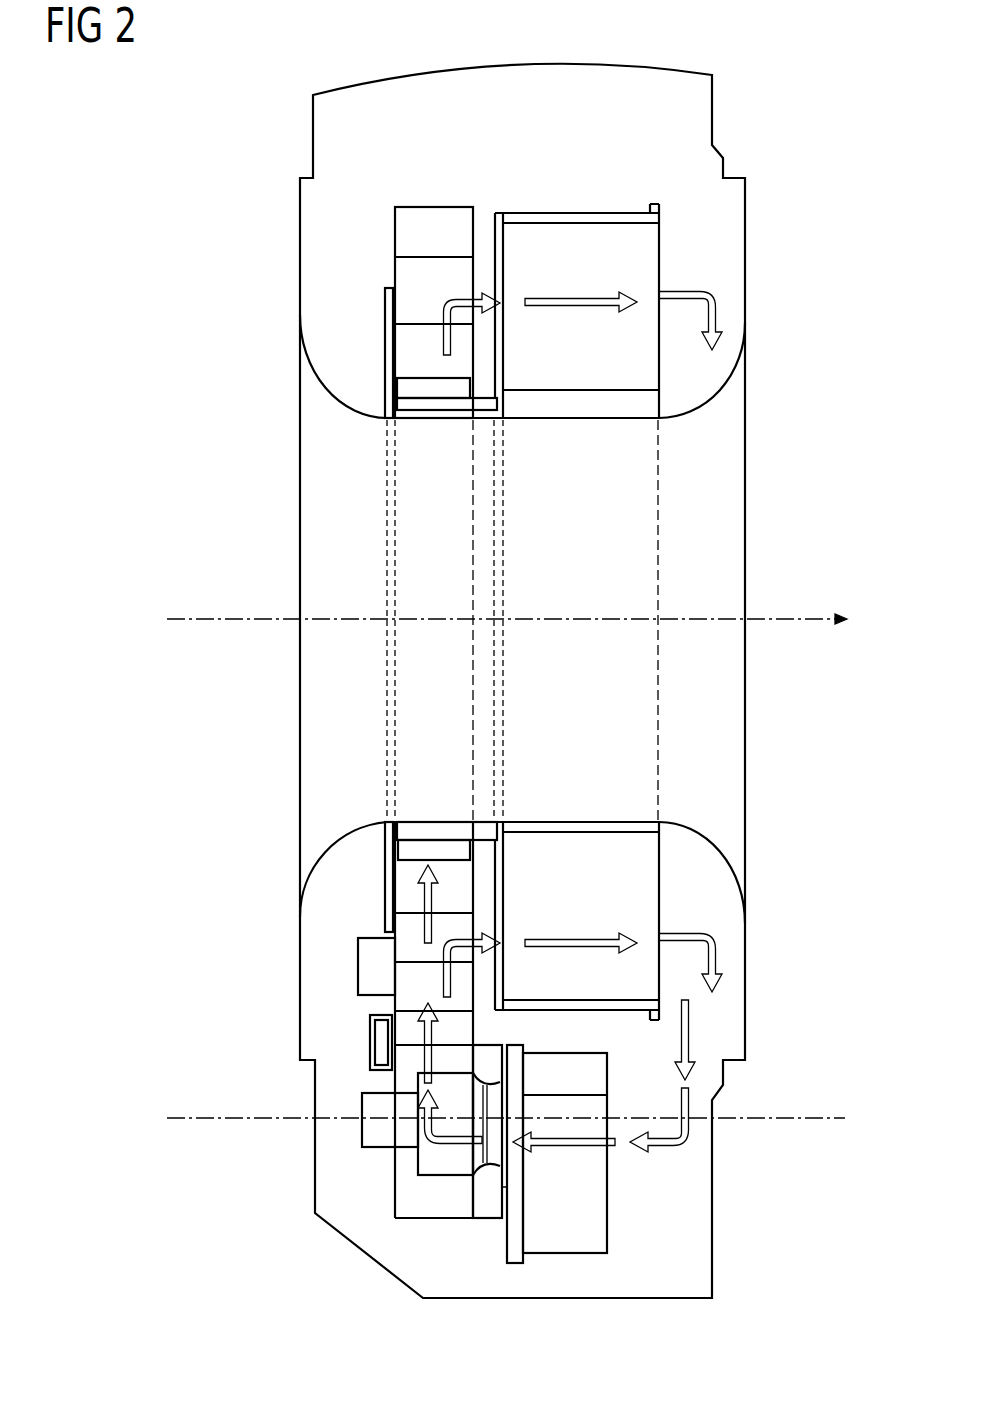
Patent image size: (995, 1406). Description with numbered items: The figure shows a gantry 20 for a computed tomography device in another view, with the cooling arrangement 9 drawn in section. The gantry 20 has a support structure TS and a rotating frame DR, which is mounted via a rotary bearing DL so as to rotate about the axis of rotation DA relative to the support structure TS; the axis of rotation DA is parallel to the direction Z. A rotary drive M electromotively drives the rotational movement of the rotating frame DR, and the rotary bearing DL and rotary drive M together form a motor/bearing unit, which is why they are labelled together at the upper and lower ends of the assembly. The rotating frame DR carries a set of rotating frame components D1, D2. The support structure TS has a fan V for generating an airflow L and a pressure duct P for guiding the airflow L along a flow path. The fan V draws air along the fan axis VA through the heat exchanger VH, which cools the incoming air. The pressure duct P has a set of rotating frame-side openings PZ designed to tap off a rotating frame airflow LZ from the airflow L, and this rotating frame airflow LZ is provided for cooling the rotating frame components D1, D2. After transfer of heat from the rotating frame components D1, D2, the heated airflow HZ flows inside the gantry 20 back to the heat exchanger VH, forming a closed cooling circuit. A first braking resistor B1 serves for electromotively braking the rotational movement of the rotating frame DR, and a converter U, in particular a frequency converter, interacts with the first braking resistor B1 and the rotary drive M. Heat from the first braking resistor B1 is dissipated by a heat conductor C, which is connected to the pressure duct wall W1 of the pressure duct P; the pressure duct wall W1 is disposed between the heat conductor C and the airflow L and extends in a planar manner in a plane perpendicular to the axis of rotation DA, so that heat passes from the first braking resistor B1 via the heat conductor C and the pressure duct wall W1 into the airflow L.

The gantry 20 is at (350, 1260).
The cooling assembly 9 is at (345, 530).
The support structure TS is at (393, 230).
The pressure duct P is at (420, 278).
The rotary bearing DL is at (346, 611).
The rotary drive M is at (433, 400).
The rotating frame component D1 is at (638, 280).
The rotating frame-side openings PZ is at (472, 297).
The rotating frame airflow LZ is at (560, 297).
The rotating frame DR is at (607, 209).
The axis of rotation DA is at (182, 619).
The direction Z is at (822, 619).
The fan axis VA is at (188, 1118).
The rotating frame component D2 is at (637, 872).
The airflow L is at (427, 900).
The converter U is at (378, 967).
The pressure duct wall W1 is at (392, 1002).
The heat conductor C is at (370, 1030).
The first braking resistor B1 is at (370, 1052).
The fan V is at (378, 1140).
The heat exchanger VH is at (607, 1197).
The heated airflow HZ is at (688, 1133).